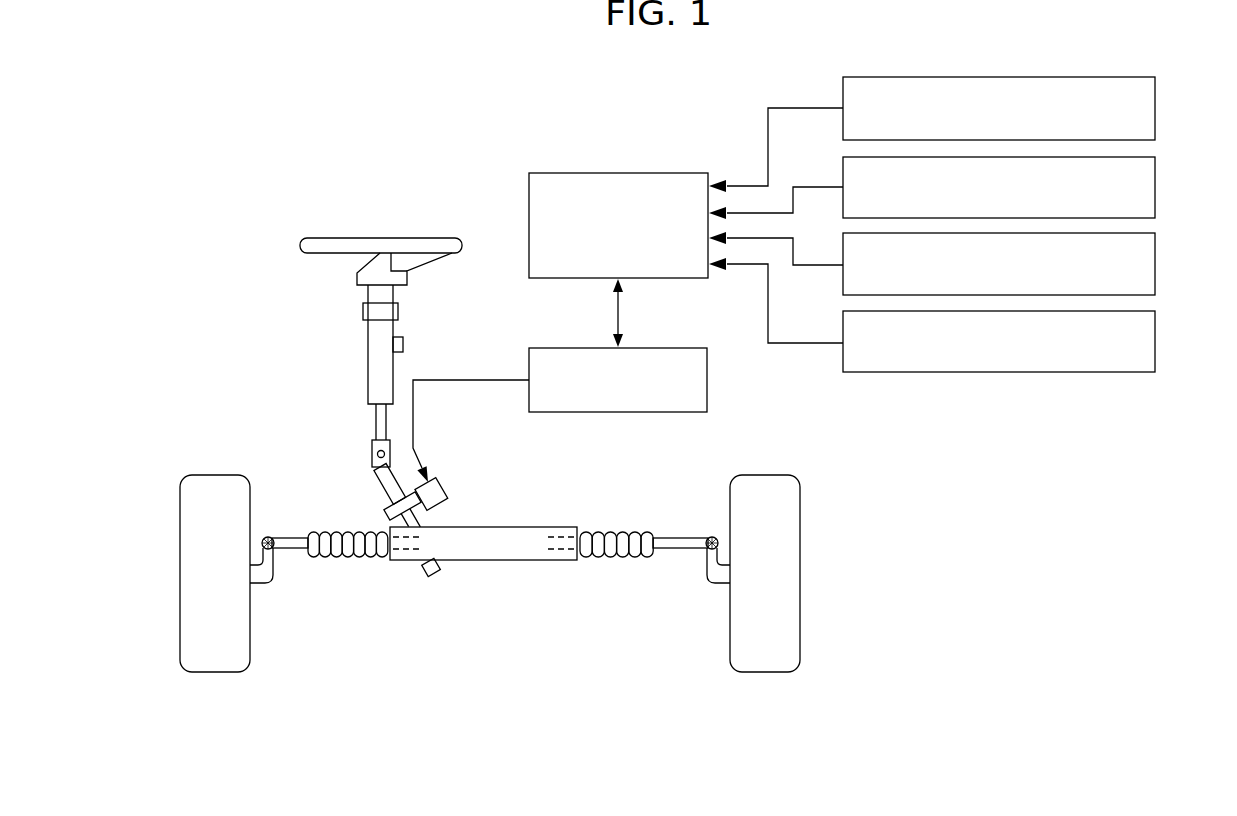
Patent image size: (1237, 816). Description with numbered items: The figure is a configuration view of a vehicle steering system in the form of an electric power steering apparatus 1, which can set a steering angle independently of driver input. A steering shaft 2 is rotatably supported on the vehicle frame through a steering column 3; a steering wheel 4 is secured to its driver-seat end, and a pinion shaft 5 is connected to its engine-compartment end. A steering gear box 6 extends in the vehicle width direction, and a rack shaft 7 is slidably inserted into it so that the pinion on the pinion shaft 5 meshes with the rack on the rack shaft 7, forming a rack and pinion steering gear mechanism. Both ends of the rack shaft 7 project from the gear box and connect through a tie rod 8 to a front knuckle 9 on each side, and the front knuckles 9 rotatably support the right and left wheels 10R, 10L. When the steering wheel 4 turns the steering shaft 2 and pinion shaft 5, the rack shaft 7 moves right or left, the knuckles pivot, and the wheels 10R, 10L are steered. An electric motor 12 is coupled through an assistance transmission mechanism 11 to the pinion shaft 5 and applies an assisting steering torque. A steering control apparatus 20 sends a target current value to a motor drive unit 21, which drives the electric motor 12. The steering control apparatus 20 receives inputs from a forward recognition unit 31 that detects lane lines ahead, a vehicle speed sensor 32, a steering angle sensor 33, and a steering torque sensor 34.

The electric power steering apparatus 1 is at (272, 392).
The steering shaft 2 is at (376, 424).
The steering column 3 is at (368, 361).
The steering wheel 4 is at (385, 237).
The pinion shaft 5 is at (380, 489).
The steering gear box 6 is at (503, 561).
The rack shaft 7 is at (558, 527).
The tie rod 8 is at (294, 549).
The front knuckle 9 is at (268, 585).
The right wheel 10R is at (213, 672).
The left wheel 10L is at (767, 672).
The assistance transmission mechanism 11 is at (385, 517).
The electric motor 12 is at (447, 490).
The steering control apparatus 20 is at (622, 172).
The motor drive unit 21 is at (708, 380).
The forward recognition unit 31 is at (1155, 103).
The vehicle speed sensor 32 is at (1155, 185).
The steering angle sensor 33 is at (1155, 263).
The steering torque sensor 34 is at (1155, 340).